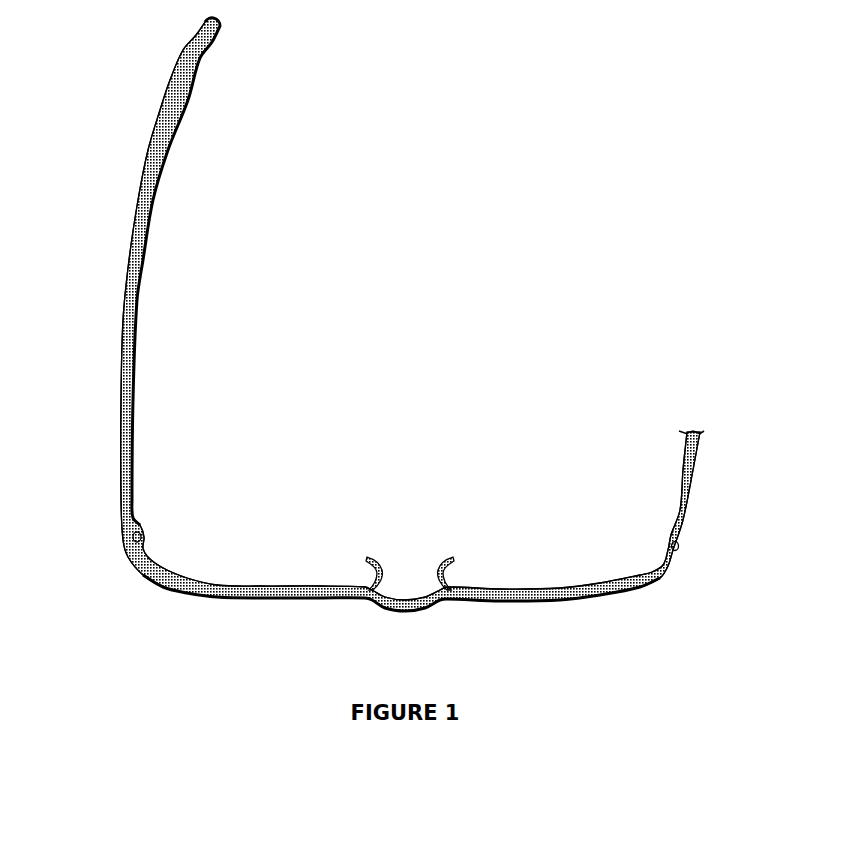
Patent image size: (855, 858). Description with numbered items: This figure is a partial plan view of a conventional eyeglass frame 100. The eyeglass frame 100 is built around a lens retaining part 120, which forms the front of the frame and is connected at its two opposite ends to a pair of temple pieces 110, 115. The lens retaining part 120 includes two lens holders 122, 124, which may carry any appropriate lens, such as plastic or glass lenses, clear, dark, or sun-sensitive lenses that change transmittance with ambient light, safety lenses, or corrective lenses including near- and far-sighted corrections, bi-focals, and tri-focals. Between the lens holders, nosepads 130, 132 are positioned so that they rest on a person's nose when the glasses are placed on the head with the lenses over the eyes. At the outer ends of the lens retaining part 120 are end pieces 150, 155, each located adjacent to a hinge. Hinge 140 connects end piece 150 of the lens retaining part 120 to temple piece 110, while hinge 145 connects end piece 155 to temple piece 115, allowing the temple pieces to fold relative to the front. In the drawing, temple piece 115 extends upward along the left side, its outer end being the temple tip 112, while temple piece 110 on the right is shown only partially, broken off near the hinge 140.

The eyeglass frame 100 is at (345, 327).
The temple piece 110 is at (652, 447).
The temple tip 112 is at (192, 83).
The temple piece 115 is at (158, 318).
The lens retaining part 120 is at (400, 506).
The lens holder 122 is at (258, 586).
The lens holder 124 is at (541, 590).
The nosepad 130 is at (368, 560).
The nosepad 132 is at (446, 558).
The hinge 140 is at (683, 553).
The hinge 145 is at (133, 533).
The end piece 150 is at (675, 570).
The end piece 155 is at (136, 560).